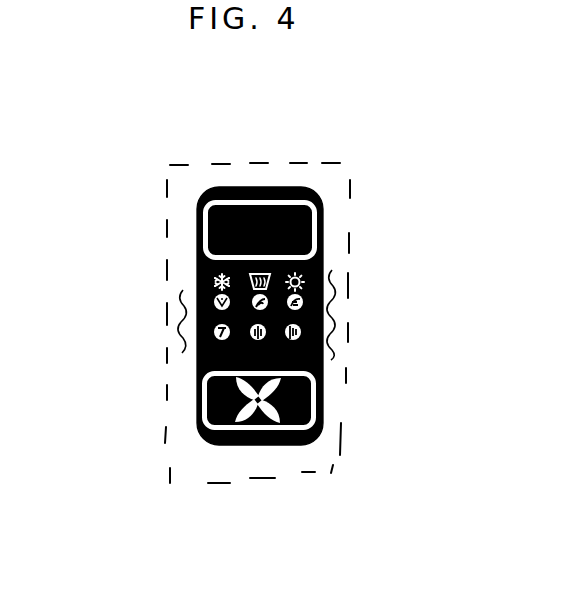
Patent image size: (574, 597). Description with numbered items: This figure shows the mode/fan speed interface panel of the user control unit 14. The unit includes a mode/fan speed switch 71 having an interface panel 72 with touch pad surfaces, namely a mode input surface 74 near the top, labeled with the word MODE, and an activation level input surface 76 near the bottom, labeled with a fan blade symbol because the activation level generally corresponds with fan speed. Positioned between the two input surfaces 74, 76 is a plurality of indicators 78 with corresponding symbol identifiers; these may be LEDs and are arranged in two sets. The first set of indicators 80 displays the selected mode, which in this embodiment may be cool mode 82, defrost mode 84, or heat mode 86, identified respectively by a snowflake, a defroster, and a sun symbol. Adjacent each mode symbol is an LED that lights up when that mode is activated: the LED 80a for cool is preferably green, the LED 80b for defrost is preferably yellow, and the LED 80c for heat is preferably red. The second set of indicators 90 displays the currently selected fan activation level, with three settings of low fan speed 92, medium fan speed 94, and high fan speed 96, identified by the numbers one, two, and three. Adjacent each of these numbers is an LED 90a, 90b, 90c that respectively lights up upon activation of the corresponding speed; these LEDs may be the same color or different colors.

The user control unit 14 is at (253, 151).
The defrost mode 84 is at (200, 207).
The cool mode 82 is at (197, 262).
The LED for cool 80a is at (196, 273).
The LED for defrost 80b is at (290, 203).
The LED for heat 80c is at (335, 300).
The first set of indicators 80 is at (335, 283).
The indicators 78 is at (181, 317).
The LED for first fan activation level 90a is at (194, 358).
The LED for second fan activation level 90b is at (324, 392).
The LED for third fan activation level 90c is at (340, 362).
The second set of indicators 90 is at (335, 337).
The low fan speed 92 is at (194, 382).
The activation level input surface 76 is at (194, 420).
The medium fan speed 94 is at (217, 445).
The mode input surface 74 is at (308, 190).
The heat mode 86 is at (328, 220).
The mode/fan speed switch 71 is at (330, 249).
The interface panel 72 is at (345, 383).
The high fan speed 96 is at (323, 378).